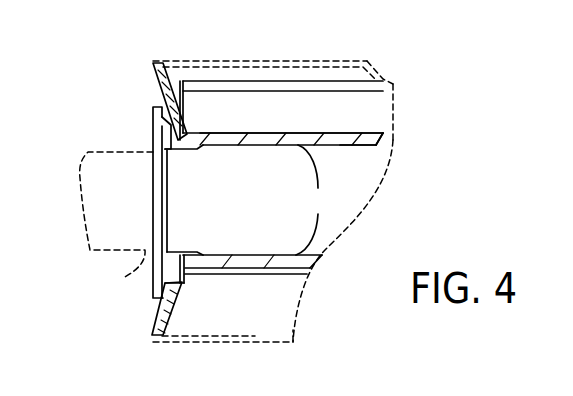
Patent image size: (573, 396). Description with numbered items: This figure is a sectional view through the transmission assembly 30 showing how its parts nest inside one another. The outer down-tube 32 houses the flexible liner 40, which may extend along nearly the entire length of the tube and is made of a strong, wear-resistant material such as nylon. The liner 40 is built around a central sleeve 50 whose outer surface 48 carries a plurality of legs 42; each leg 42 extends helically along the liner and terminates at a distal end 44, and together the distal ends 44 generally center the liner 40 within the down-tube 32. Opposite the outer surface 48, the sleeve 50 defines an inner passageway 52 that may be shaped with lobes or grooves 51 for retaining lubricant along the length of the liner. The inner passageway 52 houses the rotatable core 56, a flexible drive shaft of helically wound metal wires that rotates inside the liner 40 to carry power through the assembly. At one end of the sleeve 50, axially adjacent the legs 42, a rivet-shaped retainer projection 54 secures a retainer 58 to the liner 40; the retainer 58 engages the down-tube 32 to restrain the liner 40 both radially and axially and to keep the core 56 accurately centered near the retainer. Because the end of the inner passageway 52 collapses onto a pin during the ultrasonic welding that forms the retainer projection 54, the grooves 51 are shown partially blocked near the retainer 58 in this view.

The transmission assembly 30 is at (126, 61).
The down-tube 32 is at (161, 346).
The flexible liner 40 is at (385, 136).
The legs 42 is at (360, 111).
The distal end 44 is at (350, 86).
The outer surface 48 is at (266, 133).
The sleeve 50 is at (367, 146).
The grooves 51 is at (312, 200).
The inner passageway 52 is at (382, 217).
The retainer projection 54 is at (153, 138).
The core 56 is at (130, 273).
The retainer 58 is at (153, 119).